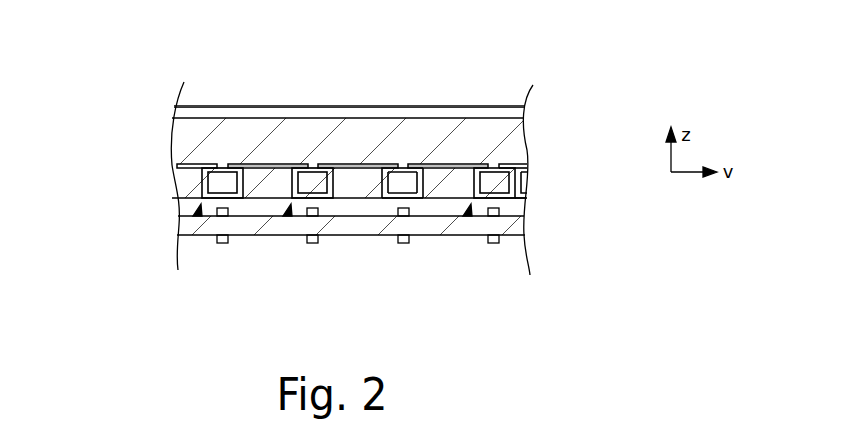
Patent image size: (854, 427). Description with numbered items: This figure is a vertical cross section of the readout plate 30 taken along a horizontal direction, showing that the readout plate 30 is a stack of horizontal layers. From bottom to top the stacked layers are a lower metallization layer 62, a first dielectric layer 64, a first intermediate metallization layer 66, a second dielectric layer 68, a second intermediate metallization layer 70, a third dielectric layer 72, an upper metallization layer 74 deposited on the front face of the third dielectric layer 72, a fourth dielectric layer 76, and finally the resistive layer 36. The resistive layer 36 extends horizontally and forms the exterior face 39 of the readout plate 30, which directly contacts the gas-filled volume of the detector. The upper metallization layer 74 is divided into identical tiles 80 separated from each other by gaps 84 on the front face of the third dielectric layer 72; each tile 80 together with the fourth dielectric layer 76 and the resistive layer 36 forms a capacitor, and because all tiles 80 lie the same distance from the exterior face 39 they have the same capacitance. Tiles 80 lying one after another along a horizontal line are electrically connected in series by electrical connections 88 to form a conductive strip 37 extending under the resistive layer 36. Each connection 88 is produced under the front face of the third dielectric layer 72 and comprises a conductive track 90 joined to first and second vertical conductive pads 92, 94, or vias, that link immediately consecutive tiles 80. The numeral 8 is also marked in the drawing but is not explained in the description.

The readout plate 30 is at (73, 60).
The exterior face 39 is at (492, 105).
The resistive layer 36 is at (526, 115).
The fourth dielectric layer 76 is at (185, 132).
The upper metallization layer 74 is at (527, 167).
The tile 80 is at (272, 165).
The gap 84 is at (223, 165).
The third dielectric layer 72 is at (185, 178).
The second intermediate metallization layer 70 is at (527, 195).
The conductive strip 37 is at (603, 157).
The first vertical conductive pad 92 is at (382, 186).
The conductive track 90 is at (393, 193).
The second vertical conductive pad 94 is at (424, 186).
The second dielectric layer 68 is at (185, 205).
The first intermediate metallization layer 66 is at (524, 217).
The first dielectric layer 64 is at (185, 227).
The lower metallization layer 62 is at (525, 240).
The electrical connection 88 is at (198, 216).
The contact 8 is at (468, 216).